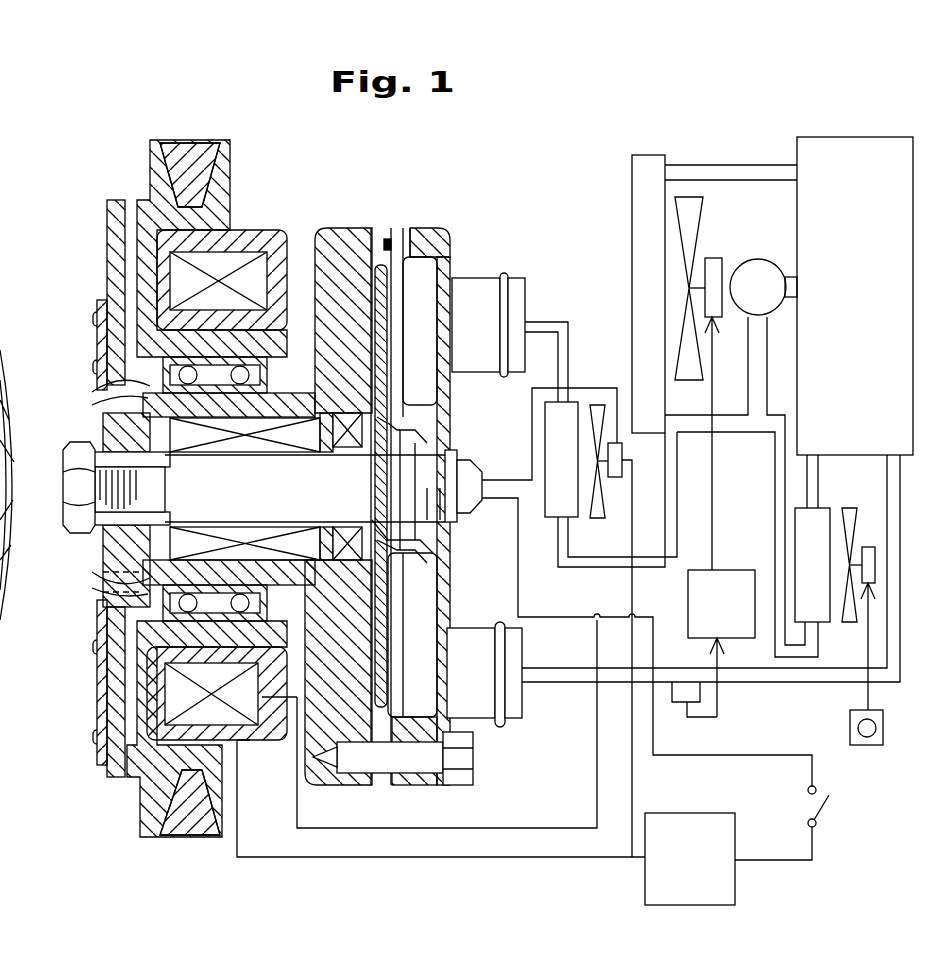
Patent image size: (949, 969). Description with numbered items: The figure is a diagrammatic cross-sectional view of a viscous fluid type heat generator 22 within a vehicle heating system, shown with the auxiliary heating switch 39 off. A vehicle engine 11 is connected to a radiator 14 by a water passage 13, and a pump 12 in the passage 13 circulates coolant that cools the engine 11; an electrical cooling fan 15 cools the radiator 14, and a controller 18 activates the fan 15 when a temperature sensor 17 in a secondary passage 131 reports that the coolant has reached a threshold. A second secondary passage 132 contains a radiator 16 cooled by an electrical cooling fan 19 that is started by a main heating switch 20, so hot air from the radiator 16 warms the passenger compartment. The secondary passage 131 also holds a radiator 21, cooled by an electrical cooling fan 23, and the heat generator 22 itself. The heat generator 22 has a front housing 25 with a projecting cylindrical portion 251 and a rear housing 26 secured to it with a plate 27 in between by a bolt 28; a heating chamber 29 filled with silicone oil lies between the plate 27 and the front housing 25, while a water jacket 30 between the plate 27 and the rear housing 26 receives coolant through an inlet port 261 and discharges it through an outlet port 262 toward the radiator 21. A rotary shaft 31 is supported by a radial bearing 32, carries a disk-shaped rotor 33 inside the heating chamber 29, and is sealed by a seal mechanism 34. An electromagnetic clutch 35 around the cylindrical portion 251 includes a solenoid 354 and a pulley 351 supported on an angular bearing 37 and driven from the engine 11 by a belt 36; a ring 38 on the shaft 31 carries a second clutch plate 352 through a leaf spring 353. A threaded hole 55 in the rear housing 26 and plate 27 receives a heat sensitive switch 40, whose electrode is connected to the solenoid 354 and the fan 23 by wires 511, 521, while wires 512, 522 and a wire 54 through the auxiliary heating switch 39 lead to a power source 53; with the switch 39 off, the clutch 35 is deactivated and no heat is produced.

The vehicle engine 11 is at (848, 142).
The pump 12 is at (760, 258).
The water passage 13 is at (727, 165).
The radiator 14 is at (632, 245).
The electrical cooling fan 15 is at (703, 217).
The radiator 16 is at (823, 508).
The temperature sensor 17 is at (672, 702).
The controller 18 is at (727, 570).
The electrical cooling fan 19 is at (850, 622).
The main heating switch 20 is at (867, 747).
The radiator 21 is at (555, 435).
The viscous fluid type heat generator 22 is at (517, 192).
The electrical cooling fan 23 is at (595, 400).
The front housing 25 is at (350, 247).
The rear housing 26 is at (427, 230).
The plate 27 is at (398, 230).
The bolt 28 is at (467, 758).
The heating chamber 29 is at (378, 256).
The water jacket 30 is at (430, 377).
The rotary shaft 31 is at (143, 460).
The radial bearing 32 is at (305, 418).
The disk-shaped rotor 33 is at (363, 608).
The seal mechanism 34 is at (343, 573).
The electromagnetic clutch 35 is at (268, 185).
The belt 36 is at (188, 836).
The angular bearing 37 is at (265, 598).
The ring 38 is at (100, 551).
The auxiliary heating switch 39 is at (827, 813).
The heat sensitive switch 40 is at (467, 508).
The power source 53 is at (737, 882).
The wire 54 is at (757, 756).
The threaded hole 55 is at (370, 483).
The secondary passage 131 is at (568, 563).
The secondary passage 132 is at (790, 655).
The cylindrical portion 251 is at (100, 398).
The inlet port 261 is at (522, 705).
The outlet port 262 is at (477, 278).
The pulley 351 is at (152, 172).
The second clutch plate 352 is at (105, 263).
The leaf spring 353 is at (97, 300).
The solenoid 354 is at (257, 708).
The wire 511 is at (597, 795).
The wire 512 is at (372, 858).
The wire 521 is at (575, 383).
The wire 522 is at (632, 787).